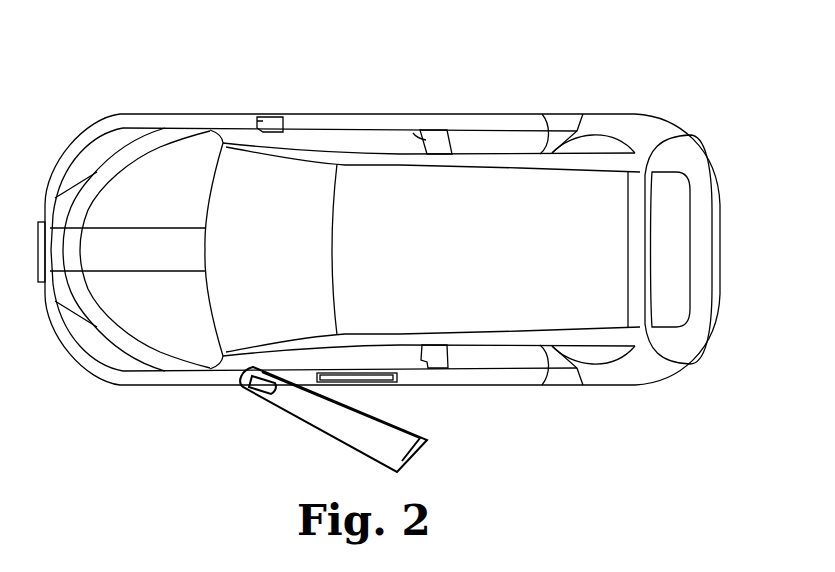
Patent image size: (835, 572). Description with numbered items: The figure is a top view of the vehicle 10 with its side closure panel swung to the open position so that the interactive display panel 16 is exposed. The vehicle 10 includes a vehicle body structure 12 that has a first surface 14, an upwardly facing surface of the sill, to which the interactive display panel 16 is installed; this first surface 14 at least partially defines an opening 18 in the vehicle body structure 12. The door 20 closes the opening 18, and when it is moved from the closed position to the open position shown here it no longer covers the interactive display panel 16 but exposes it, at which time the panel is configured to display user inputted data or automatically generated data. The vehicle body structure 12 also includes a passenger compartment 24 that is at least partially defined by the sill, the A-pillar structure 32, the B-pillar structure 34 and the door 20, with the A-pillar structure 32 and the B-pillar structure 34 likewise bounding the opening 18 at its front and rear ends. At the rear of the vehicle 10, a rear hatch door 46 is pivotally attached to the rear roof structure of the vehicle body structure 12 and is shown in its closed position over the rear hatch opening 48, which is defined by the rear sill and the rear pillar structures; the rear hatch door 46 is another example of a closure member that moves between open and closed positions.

The vehicle 10 is at (472, 50).
The vehicle body structure 12 is at (478, 106).
The first surface 14 is at (405, 379).
The interactive display panel 16 is at (353, 382).
The opening 18 is at (413, 133).
The door 20 is at (340, 430).
The passenger compartment 24 is at (243, 161).
The A-pillar structure 32 is at (297, 147).
The B-pillar structure 34 is at (435, 140).
The rear hatch door 46 is at (707, 223).
The rear hatch opening 48 is at (667, 148).